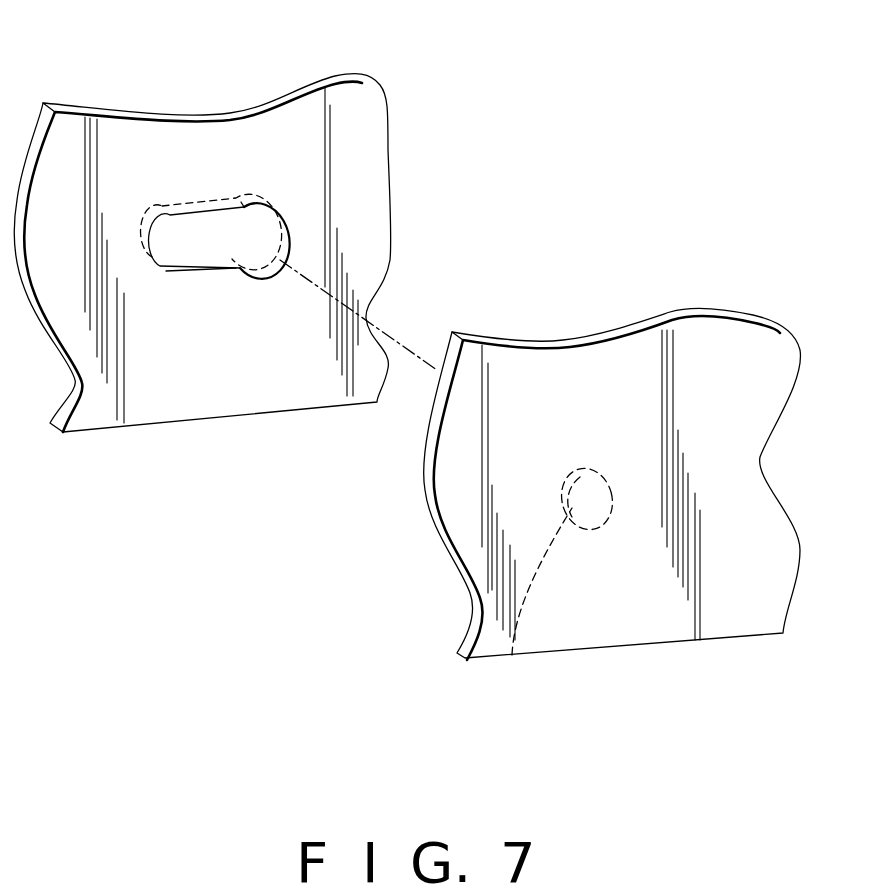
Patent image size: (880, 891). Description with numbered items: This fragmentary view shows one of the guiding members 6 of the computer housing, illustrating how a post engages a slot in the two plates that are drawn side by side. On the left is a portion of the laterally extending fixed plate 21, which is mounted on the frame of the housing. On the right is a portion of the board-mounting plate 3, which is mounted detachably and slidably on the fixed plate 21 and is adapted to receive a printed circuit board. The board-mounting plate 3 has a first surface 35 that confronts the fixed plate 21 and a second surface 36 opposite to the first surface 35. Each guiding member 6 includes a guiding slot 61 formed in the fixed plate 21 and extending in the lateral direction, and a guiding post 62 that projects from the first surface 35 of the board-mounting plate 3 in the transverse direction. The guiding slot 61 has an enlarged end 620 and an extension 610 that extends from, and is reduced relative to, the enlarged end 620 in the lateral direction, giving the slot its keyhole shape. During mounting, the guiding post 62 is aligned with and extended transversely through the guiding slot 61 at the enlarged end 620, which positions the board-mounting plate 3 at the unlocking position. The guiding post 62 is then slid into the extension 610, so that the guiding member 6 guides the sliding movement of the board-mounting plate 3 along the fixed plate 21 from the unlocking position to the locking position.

The board-mounting plate 3 is at (612, 430).
The guiding member 6 is at (357, 367).
The fixed plate 21 is at (272, 370).
The first surface 35 is at (645, 315).
The second surface 36 is at (683, 355).
The guiding slot 61 is at (206, 255).
The guiding post 62 is at (517, 657).
The extension 610 is at (172, 247).
The enlarged end 620 is at (263, 225).